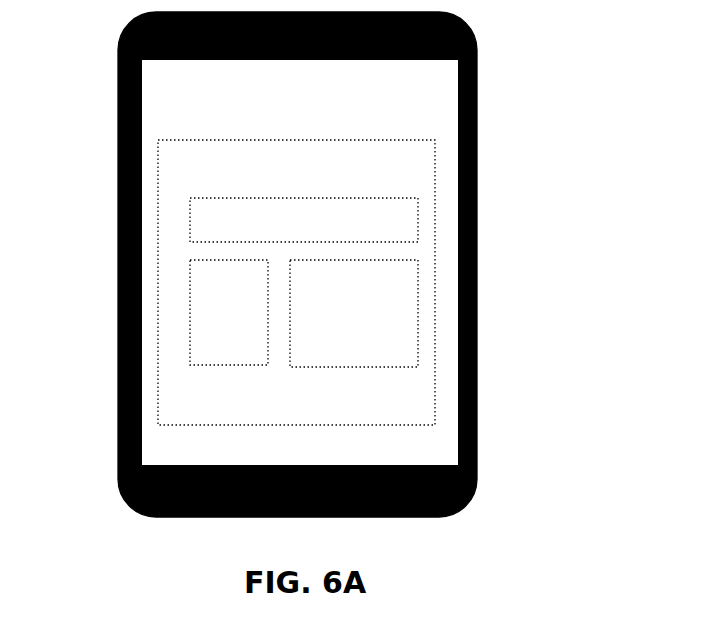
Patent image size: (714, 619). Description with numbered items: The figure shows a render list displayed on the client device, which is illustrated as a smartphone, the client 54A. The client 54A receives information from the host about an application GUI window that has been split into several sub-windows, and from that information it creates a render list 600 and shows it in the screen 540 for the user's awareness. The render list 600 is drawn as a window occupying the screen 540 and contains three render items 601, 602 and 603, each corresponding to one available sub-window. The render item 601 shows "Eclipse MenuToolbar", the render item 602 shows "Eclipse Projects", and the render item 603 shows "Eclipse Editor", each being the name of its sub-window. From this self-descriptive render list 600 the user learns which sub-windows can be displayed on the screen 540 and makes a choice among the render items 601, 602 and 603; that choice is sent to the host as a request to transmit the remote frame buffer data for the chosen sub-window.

The client device 54A is at (76, 69).
The screen 540 is at (440, 93).
The render list 600 is at (440, 178).
The render item 601 is at (190, 218).
The render item 602 is at (190, 322).
The render item 603 is at (418, 315).